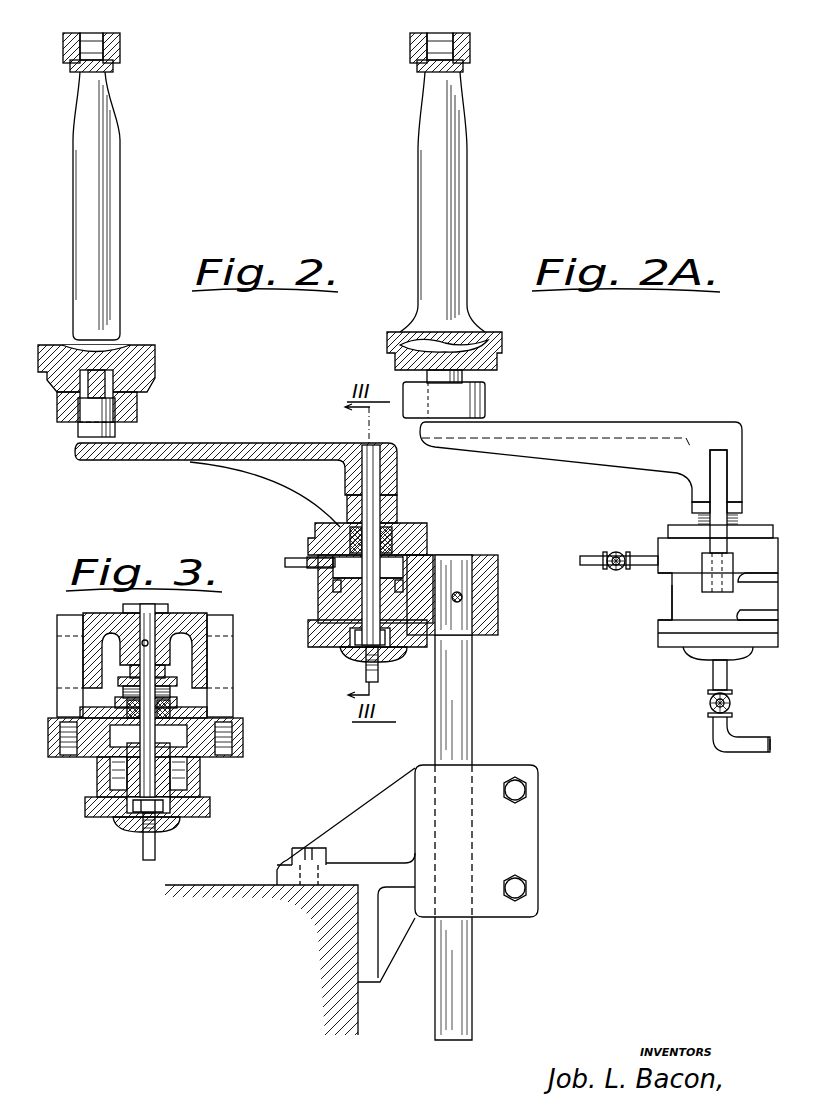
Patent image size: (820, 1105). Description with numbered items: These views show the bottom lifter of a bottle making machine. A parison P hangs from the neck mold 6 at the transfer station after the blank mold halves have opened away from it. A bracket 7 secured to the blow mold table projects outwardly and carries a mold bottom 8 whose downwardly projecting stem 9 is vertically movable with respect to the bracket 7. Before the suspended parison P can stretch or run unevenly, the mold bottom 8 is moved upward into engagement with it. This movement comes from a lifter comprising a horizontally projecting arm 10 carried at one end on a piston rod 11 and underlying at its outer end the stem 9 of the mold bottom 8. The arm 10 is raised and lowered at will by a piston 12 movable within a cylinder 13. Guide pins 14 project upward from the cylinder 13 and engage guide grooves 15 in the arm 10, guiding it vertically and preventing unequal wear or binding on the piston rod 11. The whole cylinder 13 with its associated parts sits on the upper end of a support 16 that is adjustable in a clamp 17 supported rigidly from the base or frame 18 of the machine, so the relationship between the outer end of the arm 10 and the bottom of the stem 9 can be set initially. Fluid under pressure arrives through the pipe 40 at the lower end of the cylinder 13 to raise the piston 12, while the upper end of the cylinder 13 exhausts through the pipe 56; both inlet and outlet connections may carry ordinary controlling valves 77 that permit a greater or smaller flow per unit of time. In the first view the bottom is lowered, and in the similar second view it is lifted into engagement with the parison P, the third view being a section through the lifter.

In FIG. 2, the parison P is at (107, 177).
In FIG. 2A, the parison P is at (455, 185).
In FIG. 2, the neck mold 6 is at (120, 45).
In FIG. 2A, the neck mold 6 is at (470, 45).
In FIG. 2, the bracket 7 is at (137, 408).
In FIG. 2A, the bracket 7 is at (485, 400).
In FIG. 2, the mold bottom 8 is at (155, 360).
In FIG. 2A, the mold bottom 8 is at (502, 342).
In FIG. 2, the stem 9 is at (78, 427).
In FIG. 2A, the stem 9 is at (462, 378).
In FIG. 2, the arm 10 is at (245, 445).
In FIG. 2A, the arm 10 is at (600, 432).
In FIG. 3, the arm 10 is at (197, 604).
In FIG. 2, the piston rod 11 is at (380, 495).
In FIG. 3, the piston rod 11 is at (140, 697).
In FIG. 2, the piston 12 is at (320, 586).
In FIG. 3, the piston 12 is at (100, 771).
In FIG. 2, the cylinder 13 is at (320, 605).
In FIG. 2A, the cylinder 13 is at (672, 597).
In FIG. 3, the cylinder 13 is at (193, 770).
In FIG. 2A, the guide pins 14 is at (720, 480).
In FIG. 3, the guide pins 14 is at (57, 663).
In FIG. 2A, the guide grooves 15 is at (706, 494).
In FIG. 3, the guide grooves 15 is at (57, 688).
In FIG. 2, the support 16 is at (472, 715).
In FIG. 2, the clamp 17 is at (538, 835).
In FIG. 2, the base or frame 18 is at (228, 893).
In FIG. 2, the pipe 40 is at (365, 676).
In FIG. 2A, the pipe 40 is at (760, 753).
In FIG. 3, the pipe 40 is at (143, 848).
In FIG. 2, the pipe 56 is at (297, 558).
In FIG. 2A, the pipe 56 is at (604, 556).
In FIG. 2A, the valves 77 is at (708, 703).